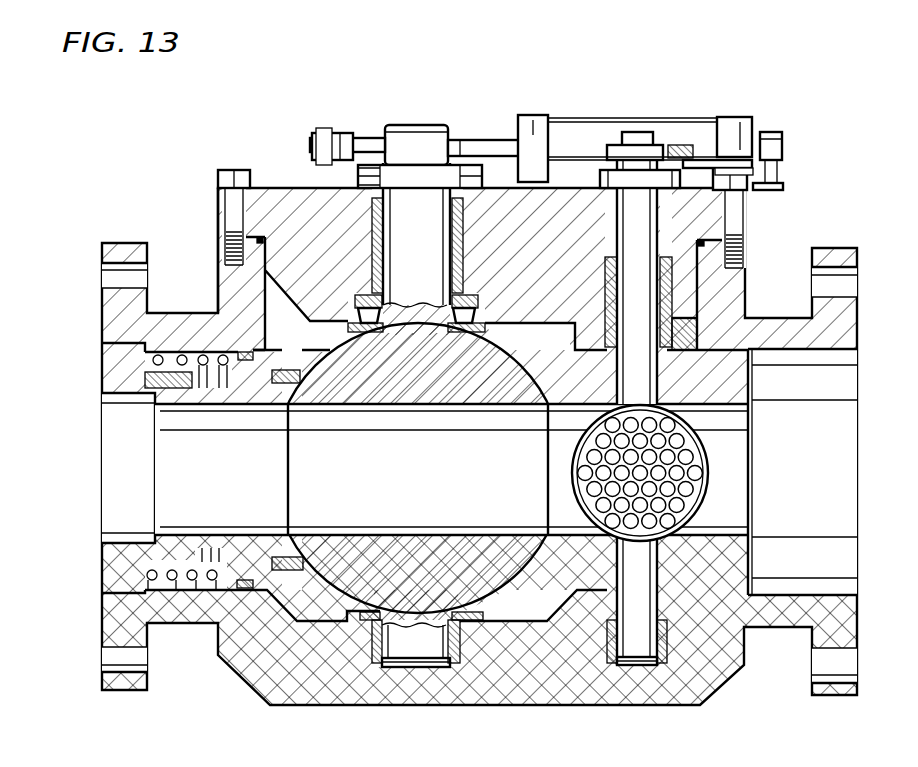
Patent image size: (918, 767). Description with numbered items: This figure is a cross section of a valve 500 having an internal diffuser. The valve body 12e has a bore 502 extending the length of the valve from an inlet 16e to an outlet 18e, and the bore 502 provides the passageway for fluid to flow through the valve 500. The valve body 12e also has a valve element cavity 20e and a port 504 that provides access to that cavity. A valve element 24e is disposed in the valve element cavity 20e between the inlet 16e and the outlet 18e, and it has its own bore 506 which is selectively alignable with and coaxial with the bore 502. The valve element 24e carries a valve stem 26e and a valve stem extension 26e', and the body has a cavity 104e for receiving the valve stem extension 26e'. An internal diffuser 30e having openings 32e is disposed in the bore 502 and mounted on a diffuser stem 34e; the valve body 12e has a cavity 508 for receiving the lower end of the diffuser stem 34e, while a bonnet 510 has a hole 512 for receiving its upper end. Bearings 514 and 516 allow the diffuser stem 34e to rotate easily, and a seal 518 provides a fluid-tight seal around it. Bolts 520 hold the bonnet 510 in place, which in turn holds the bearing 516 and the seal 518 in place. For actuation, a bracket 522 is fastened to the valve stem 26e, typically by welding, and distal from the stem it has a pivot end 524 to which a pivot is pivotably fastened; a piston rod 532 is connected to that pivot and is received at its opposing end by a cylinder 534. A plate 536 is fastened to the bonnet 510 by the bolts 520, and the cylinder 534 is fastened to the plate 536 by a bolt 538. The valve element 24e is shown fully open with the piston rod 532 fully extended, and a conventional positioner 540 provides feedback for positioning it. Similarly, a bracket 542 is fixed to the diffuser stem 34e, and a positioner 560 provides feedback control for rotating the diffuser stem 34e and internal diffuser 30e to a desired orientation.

The valve 500 is at (133, 125).
The bore 502 is at (242, 483).
The port 504 is at (266, 312).
The bore 506 is at (433, 478).
The cavity 508 is at (655, 673).
The bonnet 510 is at (217, 200).
The hole 512 is at (700, 230).
The bearing 514 is at (603, 643).
The bearing 516 is at (668, 300).
The seal 518 is at (698, 318).
The bolts 520 is at (236, 170).
The bracket 522 is at (467, 138).
The pivot end 524 is at (308, 147).
The piston rod 532 is at (502, 138).
The cylinder 534 is at (660, 120).
The plate 536 is at (785, 188).
The bolt 538 is at (770, 132).
The positioner 540 is at (358, 176).
The bracket 542 is at (687, 143).
The positioner 560 is at (700, 158).
The valve body 12e is at (313, 704).
The inlet 16e is at (102, 450).
The outlet 18e is at (862, 365).
The valve element cavity 20e is at (282, 600).
The valve element 24e is at (320, 610).
The valve stem 26e is at (416, 204).
The valve stem extension 26e' is at (406, 693).
The internal diffuser 30e is at (710, 498).
The openings 32e is at (693, 457).
The diffuser stem 34e is at (613, 135).
The cavity 104e is at (430, 663).